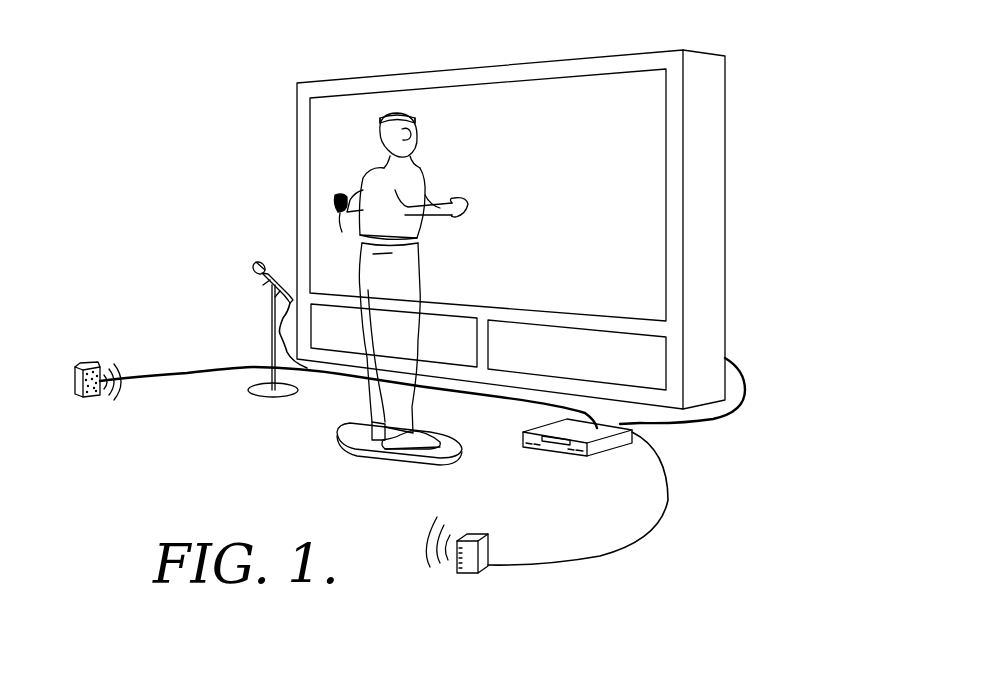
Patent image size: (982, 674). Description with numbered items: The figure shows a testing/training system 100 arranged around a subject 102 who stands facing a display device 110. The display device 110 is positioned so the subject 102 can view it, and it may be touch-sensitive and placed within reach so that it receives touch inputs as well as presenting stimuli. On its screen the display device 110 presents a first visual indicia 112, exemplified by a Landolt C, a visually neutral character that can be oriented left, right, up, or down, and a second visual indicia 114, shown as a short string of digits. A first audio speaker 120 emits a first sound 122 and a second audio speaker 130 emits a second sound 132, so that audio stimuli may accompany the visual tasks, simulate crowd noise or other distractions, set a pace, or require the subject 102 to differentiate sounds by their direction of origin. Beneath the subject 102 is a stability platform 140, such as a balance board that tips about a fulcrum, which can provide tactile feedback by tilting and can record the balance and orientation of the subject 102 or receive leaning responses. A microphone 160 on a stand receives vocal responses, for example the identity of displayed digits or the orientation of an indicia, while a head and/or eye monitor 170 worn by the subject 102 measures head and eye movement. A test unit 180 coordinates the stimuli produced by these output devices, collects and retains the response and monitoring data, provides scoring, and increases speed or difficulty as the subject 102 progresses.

The testing/training system 100 is at (113, 90).
The subject 102 is at (418, 270).
The display device 110 is at (650, 50).
The first visual indicia 112 is at (365, 233).
The second visual indicia 114 is at (490, 187).
The first audio speaker 120 is at (465, 574).
The first sound 122 is at (433, 525).
The second audio speaker 130 is at (70, 383).
The second sound 132 is at (113, 400).
The stability platform 140 is at (463, 452).
The microphone 160 is at (279, 280).
The head and/or eye monitor 170 is at (403, 110).
The test unit 180 is at (618, 450).